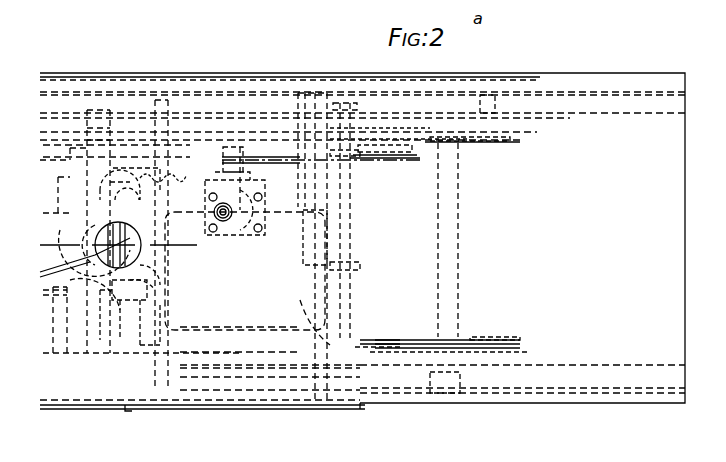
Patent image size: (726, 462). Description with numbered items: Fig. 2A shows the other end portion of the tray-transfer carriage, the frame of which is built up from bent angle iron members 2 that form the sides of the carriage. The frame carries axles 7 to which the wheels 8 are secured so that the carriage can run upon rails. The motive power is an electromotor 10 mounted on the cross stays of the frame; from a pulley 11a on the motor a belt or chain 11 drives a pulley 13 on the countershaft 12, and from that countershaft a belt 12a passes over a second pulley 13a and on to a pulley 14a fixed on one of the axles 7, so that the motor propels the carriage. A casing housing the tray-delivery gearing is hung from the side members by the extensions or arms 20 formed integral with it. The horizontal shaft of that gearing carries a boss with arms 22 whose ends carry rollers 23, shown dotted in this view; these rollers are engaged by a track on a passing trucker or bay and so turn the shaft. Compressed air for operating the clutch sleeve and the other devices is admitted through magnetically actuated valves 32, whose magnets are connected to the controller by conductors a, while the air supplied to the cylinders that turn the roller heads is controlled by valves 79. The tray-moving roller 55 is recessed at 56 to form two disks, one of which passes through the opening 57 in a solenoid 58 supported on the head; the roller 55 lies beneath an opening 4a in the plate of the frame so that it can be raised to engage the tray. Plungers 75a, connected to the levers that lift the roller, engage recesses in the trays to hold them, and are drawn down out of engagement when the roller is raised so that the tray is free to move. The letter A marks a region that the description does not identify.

The angle iron members 2 is at (640, 73).
The wheels 8 is at (537, 120).
The extensions or arms 20 is at (140, 231).
The magnetically actuated valves 32 is at (148, 179).
The roller 55 is at (130, 238).
The recess 56 is at (117, 230).
The opening 57 is at (120, 207).
The opening 4a is at (150, 262).
The solenoid 58 is at (180, 288).
The valves 79 is at (130, 313).
The electromotor 10 is at (262, 301).
The plungers 75a is at (223, 215).
The pulley 11a is at (321, 173).
The belt or chain 11 is at (328, 163).
The countershaft 12 is at (345, 222).
The pulley 13 is at (403, 163).
The axles 7 is at (458, 222).
The second pulley 13a is at (360, 340).
The belt 12a is at (397, 350).
The pulley 14a is at (507, 323).
The arms 22 is at (95, 409).
The rollers 23 is at (132, 411).
The region A is at (577, 248).
The conductors a is at (199, 162).